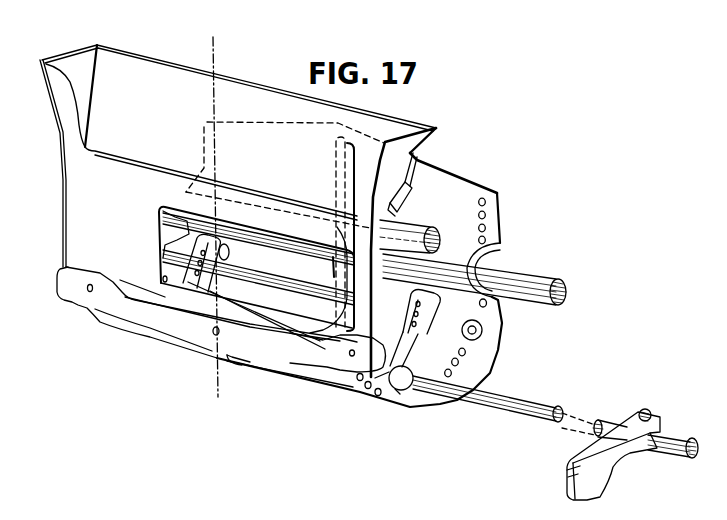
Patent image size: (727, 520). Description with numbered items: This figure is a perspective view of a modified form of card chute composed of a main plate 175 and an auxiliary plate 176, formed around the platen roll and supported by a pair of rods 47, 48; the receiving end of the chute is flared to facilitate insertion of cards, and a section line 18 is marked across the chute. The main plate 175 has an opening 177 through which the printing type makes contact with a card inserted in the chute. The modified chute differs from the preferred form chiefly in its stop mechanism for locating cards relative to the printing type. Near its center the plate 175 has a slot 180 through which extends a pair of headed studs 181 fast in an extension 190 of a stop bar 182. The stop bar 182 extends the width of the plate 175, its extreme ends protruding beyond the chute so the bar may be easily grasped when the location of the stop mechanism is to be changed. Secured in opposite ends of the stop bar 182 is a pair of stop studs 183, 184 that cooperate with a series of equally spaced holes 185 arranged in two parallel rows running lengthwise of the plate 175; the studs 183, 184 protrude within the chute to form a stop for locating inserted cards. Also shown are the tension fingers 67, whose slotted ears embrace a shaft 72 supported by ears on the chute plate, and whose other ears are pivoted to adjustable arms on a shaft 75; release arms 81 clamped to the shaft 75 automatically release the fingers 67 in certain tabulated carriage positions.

The section line 18- 18 is at (213, 38).
The main plate 175 is at (113, 168).
The auxiliary plate 176 is at (270, 97).
The opening 177 is at (277, 323).
The slot 180 is at (333, 268).
The headed studs 181 is at (227, 360).
The stop bar 182 is at (307, 367).
The stop stud 183 is at (115, 265).
The stop stud 184 is at (349, 353).
The holes 185 is at (485, 199).
The extension 190 is at (228, 362).
The rod 47 is at (417, 233).
The rod 48 is at (546, 282).
The tension fingers 67 is at (203, 296).
The shaft 72 is at (291, 285).
The shaft 75 is at (525, 403).
The release arms 81 is at (602, 487).